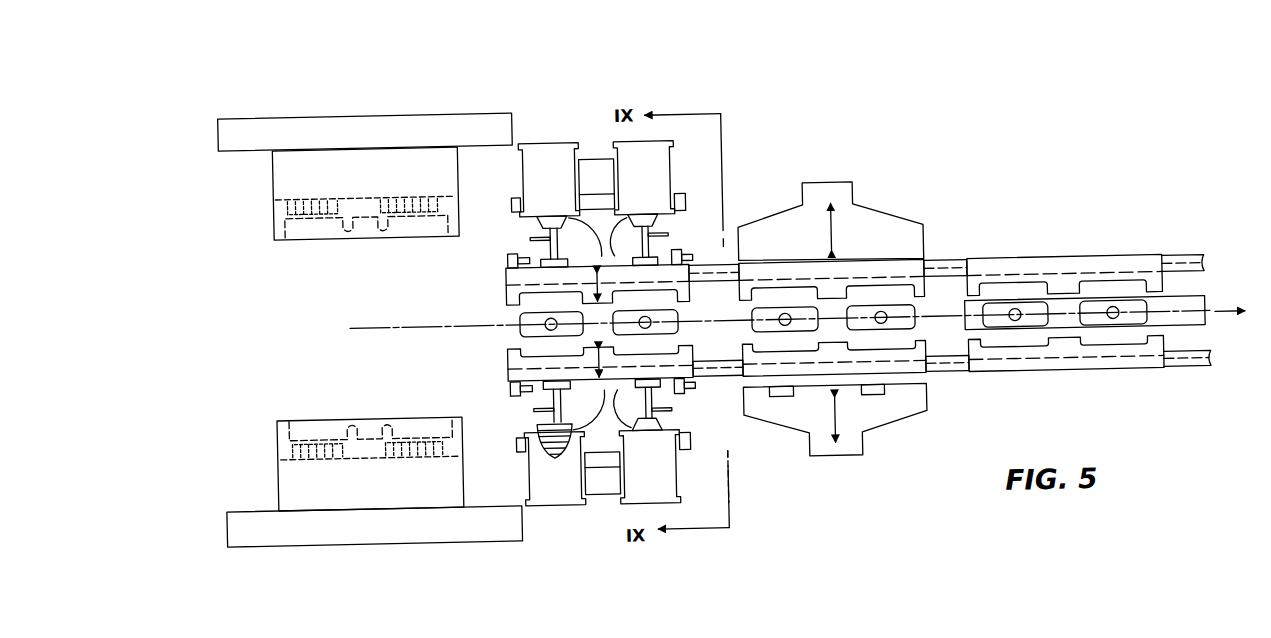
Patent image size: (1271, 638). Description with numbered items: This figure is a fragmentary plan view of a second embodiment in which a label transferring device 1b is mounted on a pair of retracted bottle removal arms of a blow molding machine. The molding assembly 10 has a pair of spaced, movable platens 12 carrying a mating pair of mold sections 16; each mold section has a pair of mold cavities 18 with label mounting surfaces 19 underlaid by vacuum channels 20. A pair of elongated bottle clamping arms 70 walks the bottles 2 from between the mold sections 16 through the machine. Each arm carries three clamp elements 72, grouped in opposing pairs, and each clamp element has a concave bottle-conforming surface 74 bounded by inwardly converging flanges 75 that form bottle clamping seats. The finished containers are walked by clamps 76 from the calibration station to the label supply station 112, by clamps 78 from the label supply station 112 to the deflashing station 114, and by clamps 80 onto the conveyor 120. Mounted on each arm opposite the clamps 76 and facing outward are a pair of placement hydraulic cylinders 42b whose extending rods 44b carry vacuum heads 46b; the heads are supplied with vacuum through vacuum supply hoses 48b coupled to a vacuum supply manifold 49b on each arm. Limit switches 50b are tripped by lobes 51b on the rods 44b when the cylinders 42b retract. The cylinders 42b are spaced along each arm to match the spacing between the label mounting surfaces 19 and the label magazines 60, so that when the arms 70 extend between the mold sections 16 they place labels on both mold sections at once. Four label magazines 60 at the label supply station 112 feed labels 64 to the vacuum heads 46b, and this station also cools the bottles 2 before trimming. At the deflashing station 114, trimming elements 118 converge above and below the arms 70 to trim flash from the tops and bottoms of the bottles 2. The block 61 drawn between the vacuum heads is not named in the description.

The label transferring device 1b is at (736, 162).
The bottles 2 is at (530, 313).
The molding assembly 10 is at (272, 372).
The platens 12 is at (262, 138).
The mold sections 16 is at (283, 188).
The mold cavities 18 is at (396, 230).
The label mounting surfaces 19 is at (392, 226).
The vacuum channels 20 is at (406, 188).
The placement hydraulic cylinders 42b is at (541, 255).
The extending rods 44b is at (540, 222).
The vacuum heads 46b is at (558, 207).
The vacuum supply hoses 48b is at (585, 250).
The vacuum supply manifold 49b is at (601, 327).
The limit switches 50b is at (510, 383).
The lobes 51b is at (670, 228).
The label magazines 60 is at (611, 156).
The intermediate block 61 is at (605, 190).
The labels 64 is at (556, 453).
The bottle clamping arms 70 is at (957, 262).
The clamp elements 72 is at (1158, 250).
The bottle-conforming surface 74 is at (646, 287).
The inwardly converging flanges 75 is at (507, 290).
The clamps 76 is at (532, 344).
The clamps 78 is at (796, 293).
The clamps 80 is at (1052, 288).
The label supply station 112 is at (733, 450).
The deflashing station 114 is at (888, 424).
The trimming elements 118 is at (870, 222).
The conveyor 120 is at (1194, 325).